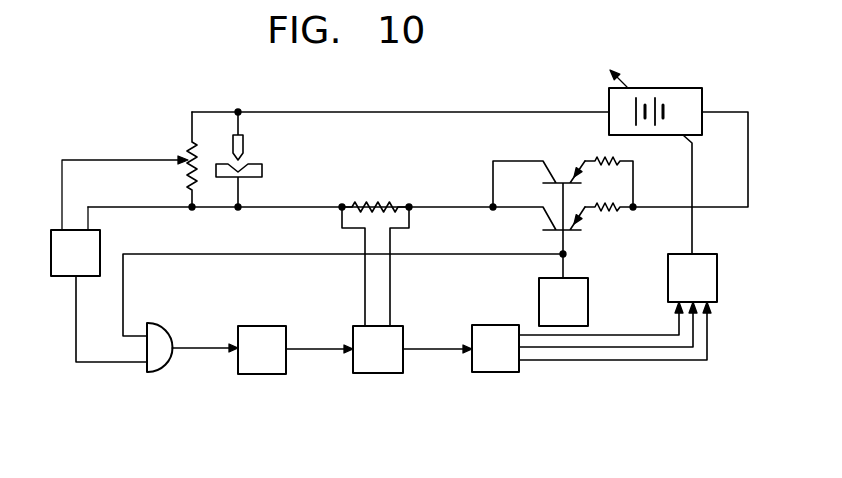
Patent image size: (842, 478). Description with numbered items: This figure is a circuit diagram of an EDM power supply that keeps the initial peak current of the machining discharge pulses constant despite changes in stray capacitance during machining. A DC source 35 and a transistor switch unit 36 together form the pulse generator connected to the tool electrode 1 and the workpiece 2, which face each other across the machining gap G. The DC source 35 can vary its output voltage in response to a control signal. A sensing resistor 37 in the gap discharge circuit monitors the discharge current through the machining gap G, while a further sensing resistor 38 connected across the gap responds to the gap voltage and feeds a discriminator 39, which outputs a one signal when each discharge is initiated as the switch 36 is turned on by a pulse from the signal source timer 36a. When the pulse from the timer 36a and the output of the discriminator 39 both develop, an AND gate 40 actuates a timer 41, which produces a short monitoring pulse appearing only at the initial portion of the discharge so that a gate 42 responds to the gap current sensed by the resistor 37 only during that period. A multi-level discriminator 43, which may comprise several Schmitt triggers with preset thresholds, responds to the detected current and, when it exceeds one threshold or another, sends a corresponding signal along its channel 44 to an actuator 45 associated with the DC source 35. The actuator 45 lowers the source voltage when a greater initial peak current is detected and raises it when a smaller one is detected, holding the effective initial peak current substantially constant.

The tool electrode 1 is at (243, 147).
The workpiece 2 is at (262, 172).
The machining gap G is at (244, 162).
The DC source 35 is at (652, 88).
The transistor switch unit 36 is at (562, 172).
The signal source timer 36a is at (588, 288).
The sensing resistor 37 is at (372, 200).
The sensing resistor 38 is at (186, 152).
The discriminator 39 is at (60, 276).
The AND gate 40 is at (152, 373).
The timer 41 is at (263, 374).
The gate 42 is at (380, 373).
The multi-level discriminator 43 is at (495, 372).
The channel 44 is at (633, 363).
The actuator 45 is at (717, 276).